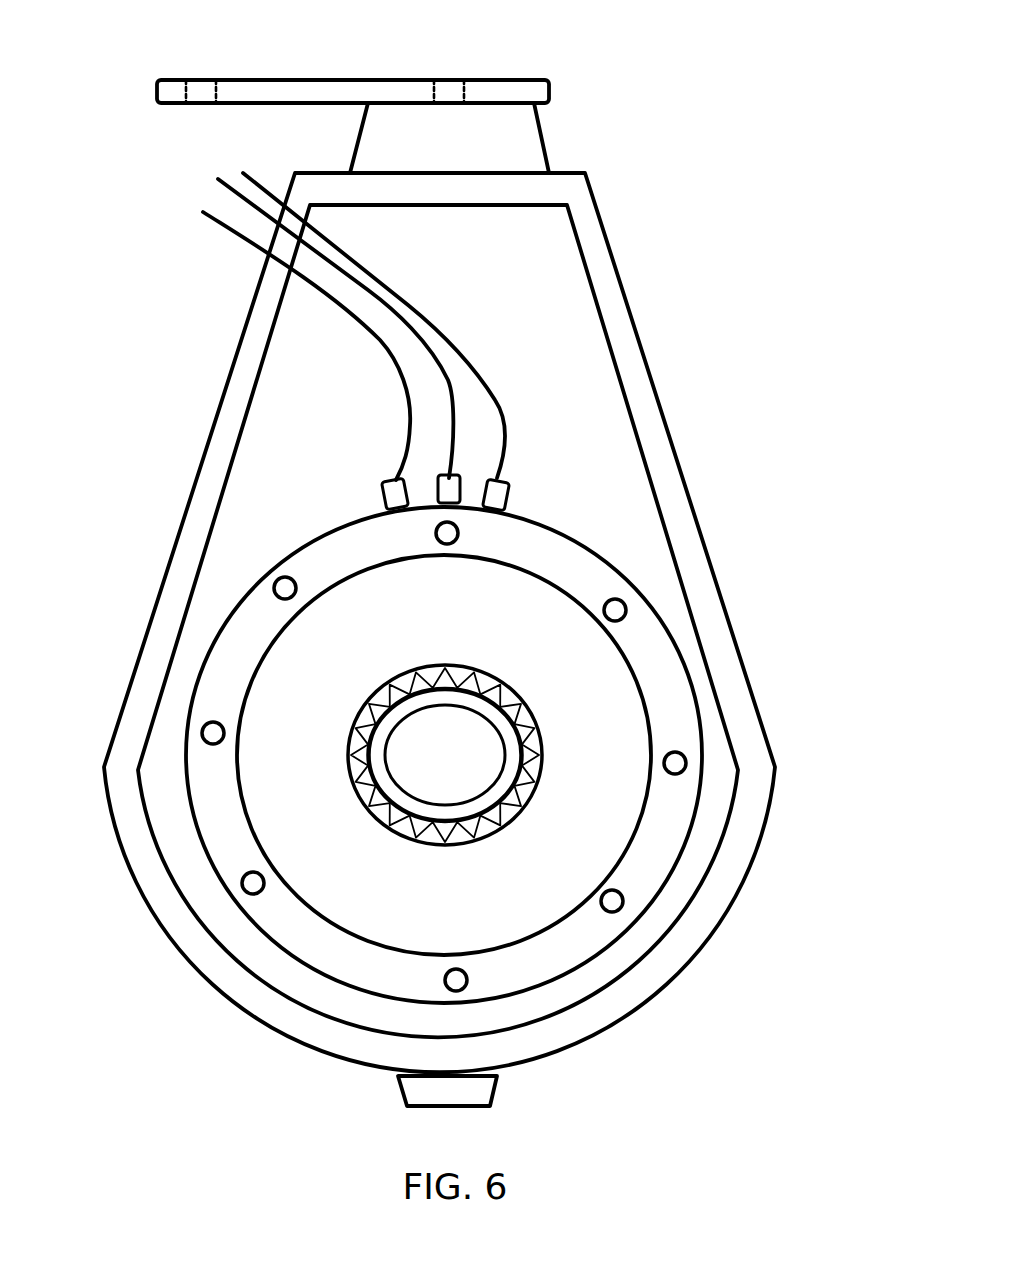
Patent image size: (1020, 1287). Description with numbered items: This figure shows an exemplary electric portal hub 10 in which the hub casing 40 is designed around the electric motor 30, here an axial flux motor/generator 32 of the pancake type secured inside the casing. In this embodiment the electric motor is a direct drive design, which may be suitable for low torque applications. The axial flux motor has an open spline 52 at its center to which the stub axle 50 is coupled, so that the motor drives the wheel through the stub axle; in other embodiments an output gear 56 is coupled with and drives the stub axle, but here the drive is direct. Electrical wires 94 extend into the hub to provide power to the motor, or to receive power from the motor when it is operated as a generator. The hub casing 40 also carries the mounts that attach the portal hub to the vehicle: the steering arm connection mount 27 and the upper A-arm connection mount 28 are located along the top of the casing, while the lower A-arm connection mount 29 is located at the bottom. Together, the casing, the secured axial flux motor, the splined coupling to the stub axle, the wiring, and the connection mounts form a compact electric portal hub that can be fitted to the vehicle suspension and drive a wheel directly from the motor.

The electric portal hub 10 is at (432, 587).
The steering arm connection mount 27 is at (369, 53).
The upper A-arm connection mount 28 is at (453, 88).
The lower A-arm connection mount 29 is at (487, 1102).
The electric motor 30 is at (520, 545).
The axial flux motor/generator 32 is at (572, 585).
The hub casing 40 is at (598, 242).
The stub axle 50 is at (512, 748).
The open spline 52 is at (377, 697).
The output gear 56 is at (483, 675).
The electrical wires 94 is at (443, 330).